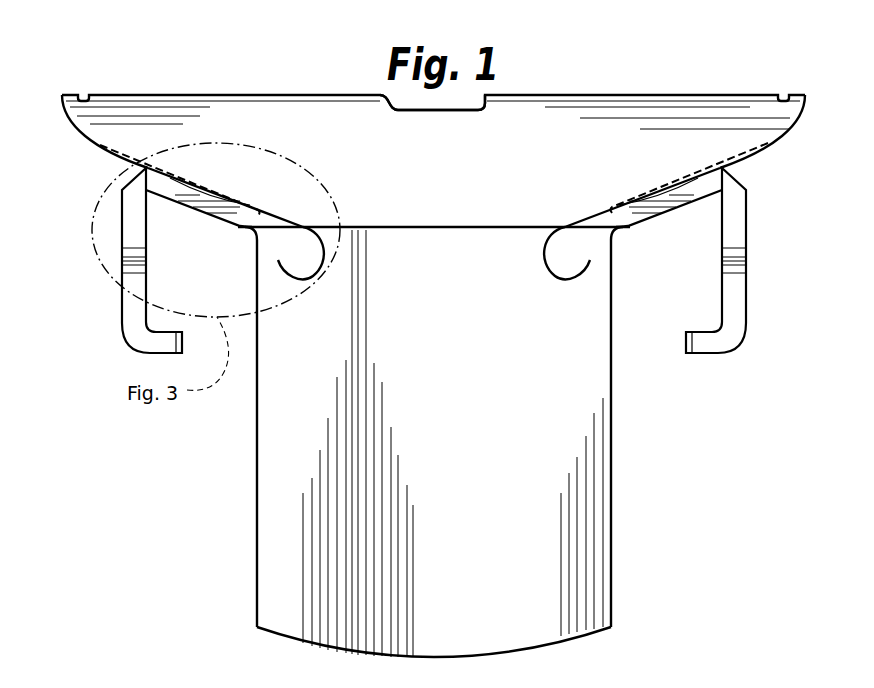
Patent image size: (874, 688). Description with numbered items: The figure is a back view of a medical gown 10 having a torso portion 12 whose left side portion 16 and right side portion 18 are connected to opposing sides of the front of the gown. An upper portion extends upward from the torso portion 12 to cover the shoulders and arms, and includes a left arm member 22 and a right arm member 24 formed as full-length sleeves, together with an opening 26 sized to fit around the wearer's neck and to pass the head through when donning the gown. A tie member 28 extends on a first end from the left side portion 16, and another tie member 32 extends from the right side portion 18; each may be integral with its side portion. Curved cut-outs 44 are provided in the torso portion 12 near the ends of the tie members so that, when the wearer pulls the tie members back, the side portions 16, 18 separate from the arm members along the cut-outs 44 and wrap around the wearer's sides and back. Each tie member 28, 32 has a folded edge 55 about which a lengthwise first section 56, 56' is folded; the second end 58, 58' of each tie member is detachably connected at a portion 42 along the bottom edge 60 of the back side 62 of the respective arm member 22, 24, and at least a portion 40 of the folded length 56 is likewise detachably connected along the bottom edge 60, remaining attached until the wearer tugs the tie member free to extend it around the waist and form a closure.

The medical gown 10 is at (103, 42).
The torso portion 12 is at (481, 414).
The left side portion 16 is at (257, 460).
The right side portion 18 is at (598, 317).
The left arm member 22 is at (232, 108).
The right arm member 24 is at (642, 107).
The opening 26 is at (408, 110).
The tie member 28 is at (132, 225).
The tie member 32 is at (733, 243).
The portion of folded length 40 is at (152, 165).
The portion along bottom edge 42 is at (152, 172).
The curved cut-outs 44 is at (306, 280).
The folded edge 55 is at (173, 342).
The first section 56 is at (160, 245).
The first section 56' is at (669, 212).
The second end 58 is at (258, 251).
The second end 58' is at (616, 253).
The bottom edge 60 is at (668, 178).
The back side 62 is at (497, 104).